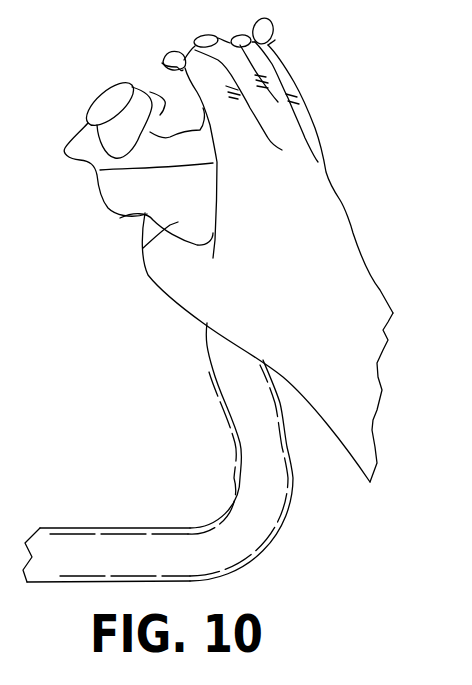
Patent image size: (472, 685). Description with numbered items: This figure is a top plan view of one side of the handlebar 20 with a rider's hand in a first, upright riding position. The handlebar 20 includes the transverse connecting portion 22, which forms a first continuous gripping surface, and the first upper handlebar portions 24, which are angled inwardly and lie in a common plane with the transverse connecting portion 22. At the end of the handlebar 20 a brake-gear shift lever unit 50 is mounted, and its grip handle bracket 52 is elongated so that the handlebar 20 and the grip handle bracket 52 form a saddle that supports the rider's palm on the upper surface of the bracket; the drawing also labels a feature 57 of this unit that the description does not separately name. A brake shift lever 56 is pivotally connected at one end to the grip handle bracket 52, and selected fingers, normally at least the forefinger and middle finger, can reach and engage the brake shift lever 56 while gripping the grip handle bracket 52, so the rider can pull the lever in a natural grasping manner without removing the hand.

The handlebar 20 is at (186, 452).
The transverse connecting portion 22 is at (137, 523).
The first upper handlebar portions 24 is at (283, 533).
The brake-gear shift lever unit 50 is at (93, 190).
The grip handle bracket 52 is at (143, 248).
The brake shift lever 56 is at (273, 40).
The tube end opening 57 is at (78, 143).